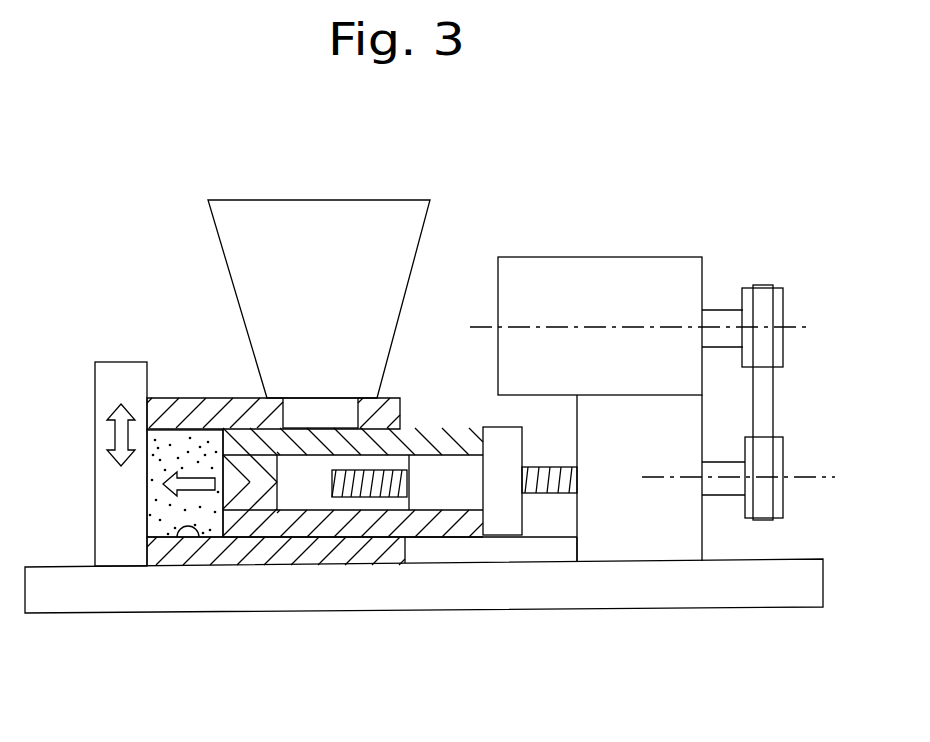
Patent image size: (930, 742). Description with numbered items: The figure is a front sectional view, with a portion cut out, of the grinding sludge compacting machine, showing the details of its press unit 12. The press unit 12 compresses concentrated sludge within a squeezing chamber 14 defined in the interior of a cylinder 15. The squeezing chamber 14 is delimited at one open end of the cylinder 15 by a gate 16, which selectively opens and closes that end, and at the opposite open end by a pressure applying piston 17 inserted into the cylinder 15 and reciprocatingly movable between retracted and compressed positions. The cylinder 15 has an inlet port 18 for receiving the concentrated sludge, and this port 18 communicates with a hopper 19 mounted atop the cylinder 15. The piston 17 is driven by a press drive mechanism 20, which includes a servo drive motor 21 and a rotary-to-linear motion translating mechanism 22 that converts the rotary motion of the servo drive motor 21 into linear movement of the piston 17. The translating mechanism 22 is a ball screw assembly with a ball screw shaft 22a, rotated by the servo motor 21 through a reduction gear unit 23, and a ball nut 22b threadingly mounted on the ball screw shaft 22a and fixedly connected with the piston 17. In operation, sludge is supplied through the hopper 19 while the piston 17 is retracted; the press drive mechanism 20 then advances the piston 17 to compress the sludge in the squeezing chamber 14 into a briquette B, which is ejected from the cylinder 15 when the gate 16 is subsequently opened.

The press unit 12 is at (419, 628).
The squeezing chamber 14 is at (193, 540).
The cylinder 15 is at (270, 567).
The gate 16 is at (112, 377).
The pressure applying piston 17 is at (237, 448).
The inlet port 18 is at (320, 407).
The hopper 19 is at (302, 215).
The press drive mechanism 20 is at (663, 241).
The servo drive motor 21 is at (678, 267).
The rotary-to-linear motion translating mechanism 22 is at (530, 512).
The ball screw shaft 22a is at (390, 470).
The ball nut 22b is at (455, 488).
The reduction gear unit 23 is at (667, 535).
The briquette B is at (180, 443).